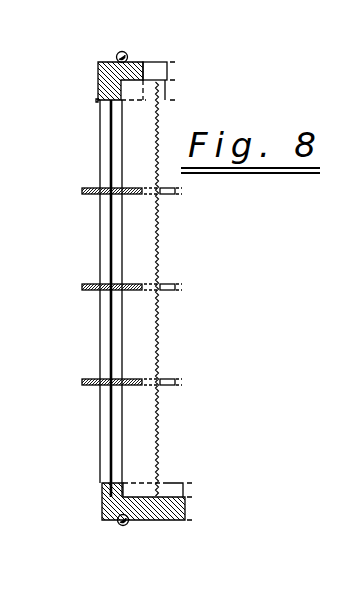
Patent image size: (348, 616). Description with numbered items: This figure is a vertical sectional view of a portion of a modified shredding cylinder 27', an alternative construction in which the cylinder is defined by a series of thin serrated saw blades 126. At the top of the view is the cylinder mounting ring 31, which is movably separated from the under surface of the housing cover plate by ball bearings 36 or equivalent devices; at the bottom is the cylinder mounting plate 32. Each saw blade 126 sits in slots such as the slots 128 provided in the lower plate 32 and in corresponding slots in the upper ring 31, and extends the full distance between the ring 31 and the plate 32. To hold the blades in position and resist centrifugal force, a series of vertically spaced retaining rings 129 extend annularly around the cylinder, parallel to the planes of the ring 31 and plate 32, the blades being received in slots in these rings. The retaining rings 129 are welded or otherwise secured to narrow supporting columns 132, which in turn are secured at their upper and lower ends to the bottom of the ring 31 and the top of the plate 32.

The modified shredding cylinder 27' is at (183, 34).
The cylinder mounting ring 31 is at (98, 78).
The cylinder mounting plate 32 is at (185, 505).
The ball bearings 36 is at (123, 52).
The serrated saw blades 126 is at (148, 248).
The slots 128 is at (128, 525).
The retaining rings 129 is at (82, 192).
The supporting columns 132 is at (100, 336).